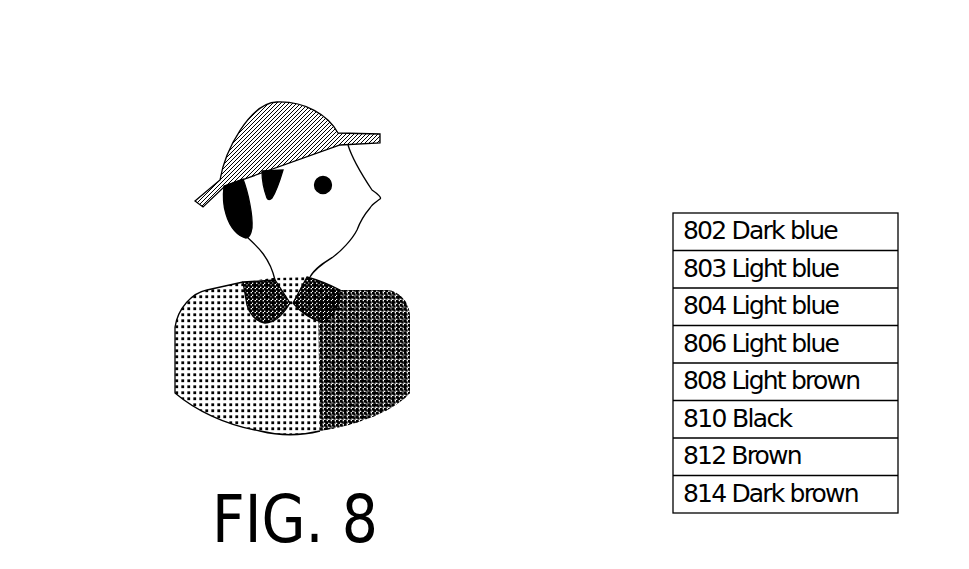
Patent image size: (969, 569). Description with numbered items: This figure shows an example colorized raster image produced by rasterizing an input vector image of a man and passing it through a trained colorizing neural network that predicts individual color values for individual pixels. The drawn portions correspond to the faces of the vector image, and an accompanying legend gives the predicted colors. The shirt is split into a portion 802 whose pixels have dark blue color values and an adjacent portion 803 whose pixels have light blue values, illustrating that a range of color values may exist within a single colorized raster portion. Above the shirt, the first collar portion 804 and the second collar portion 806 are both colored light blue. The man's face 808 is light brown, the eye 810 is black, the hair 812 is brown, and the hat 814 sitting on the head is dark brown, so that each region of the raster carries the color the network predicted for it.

The portion 802 is at (232, 348).
The portion 803 is at (353, 368).
The first collar portion 804 is at (327, 322).
The second collar portion 806 is at (260, 293).
The man's face 808 is at (333, 237).
The eye 810 is at (332, 187).
The hair 812 is at (233, 223).
The hat 814 is at (312, 135).